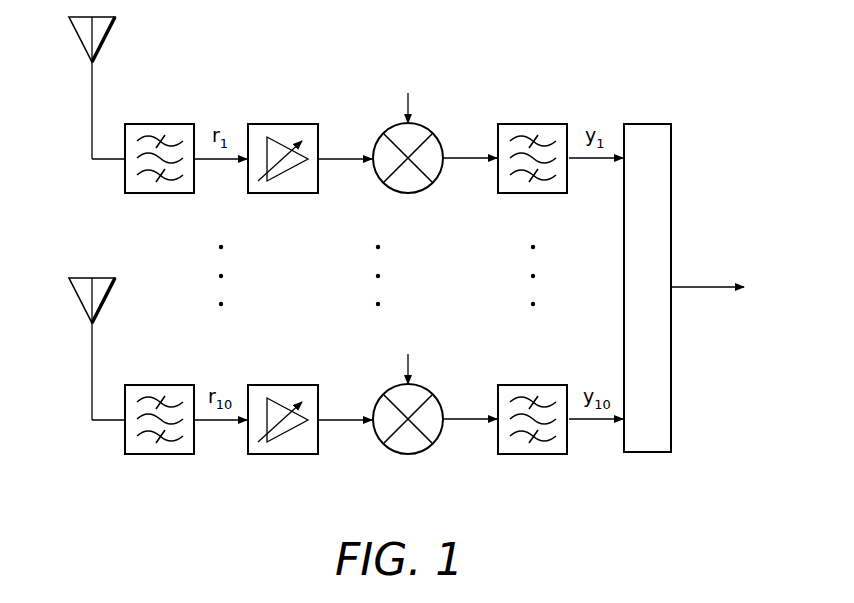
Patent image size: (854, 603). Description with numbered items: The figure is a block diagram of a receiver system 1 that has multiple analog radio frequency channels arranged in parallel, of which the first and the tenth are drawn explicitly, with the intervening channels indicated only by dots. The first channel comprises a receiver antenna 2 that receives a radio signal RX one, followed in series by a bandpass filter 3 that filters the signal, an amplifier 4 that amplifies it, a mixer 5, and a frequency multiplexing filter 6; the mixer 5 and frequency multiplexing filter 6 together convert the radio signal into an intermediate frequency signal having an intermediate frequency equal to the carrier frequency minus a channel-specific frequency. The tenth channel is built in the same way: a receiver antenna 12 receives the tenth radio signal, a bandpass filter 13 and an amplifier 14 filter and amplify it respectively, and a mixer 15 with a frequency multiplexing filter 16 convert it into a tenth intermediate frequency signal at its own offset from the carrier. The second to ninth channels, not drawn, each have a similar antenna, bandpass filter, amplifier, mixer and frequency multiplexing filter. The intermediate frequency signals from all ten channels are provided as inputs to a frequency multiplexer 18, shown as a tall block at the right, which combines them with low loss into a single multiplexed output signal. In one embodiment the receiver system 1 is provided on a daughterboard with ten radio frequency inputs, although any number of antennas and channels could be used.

The receiver system 1 is at (725, 443).
The receiver antenna 2 is at (90, 147).
The bandpass filter 3 is at (173, 124).
The amplifier 4 is at (297, 124).
The mixer 5 is at (410, 193).
The frequency multiplexing filter 6 is at (547, 124).
The receiver antenna 12 is at (90, 407).
The bandpass filter 13 is at (173, 385).
The amplifier 14 is at (297, 385).
The mixer 15 is at (410, 454).
The frequency multiplexing filter 16 is at (547, 385).
The frequency multiplexer 18 is at (673, 137).